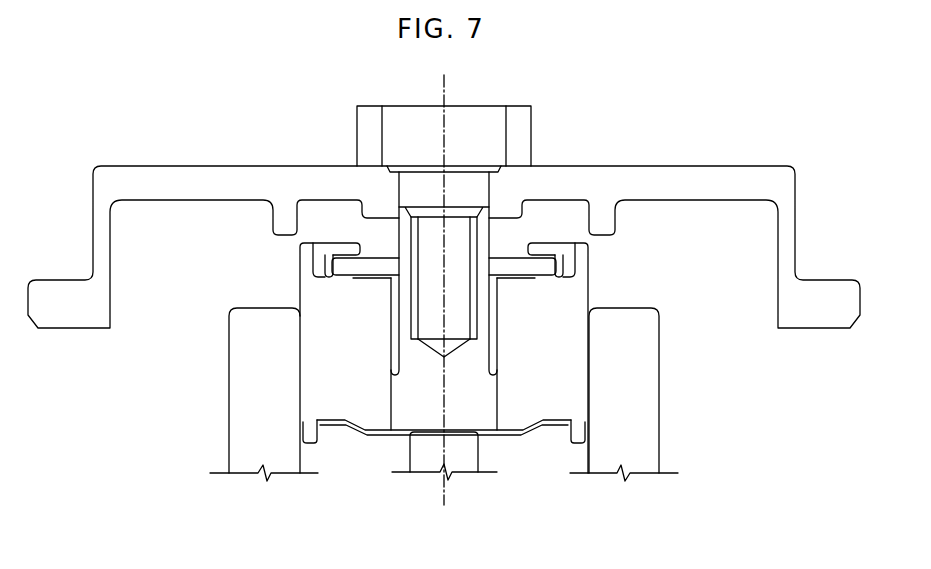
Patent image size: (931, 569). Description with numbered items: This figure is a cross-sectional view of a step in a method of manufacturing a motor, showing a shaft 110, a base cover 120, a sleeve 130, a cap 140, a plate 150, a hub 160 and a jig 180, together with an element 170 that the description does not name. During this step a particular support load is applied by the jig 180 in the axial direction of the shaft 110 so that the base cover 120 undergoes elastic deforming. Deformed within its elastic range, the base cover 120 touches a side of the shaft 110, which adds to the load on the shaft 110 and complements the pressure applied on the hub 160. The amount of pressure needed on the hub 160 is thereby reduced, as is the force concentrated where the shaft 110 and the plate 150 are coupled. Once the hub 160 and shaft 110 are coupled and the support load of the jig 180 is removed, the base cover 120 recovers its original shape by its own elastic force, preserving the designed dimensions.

The shaft 110 is at (407, 393).
The base cover 120 is at (503, 433).
The sleeve 130 is at (578, 293).
The cap 140 is at (340, 248).
The plate 150 is at (512, 263).
The hub 160 is at (723, 175).
The lower plate 170 is at (370, 432).
The jig 180 is at (462, 460).